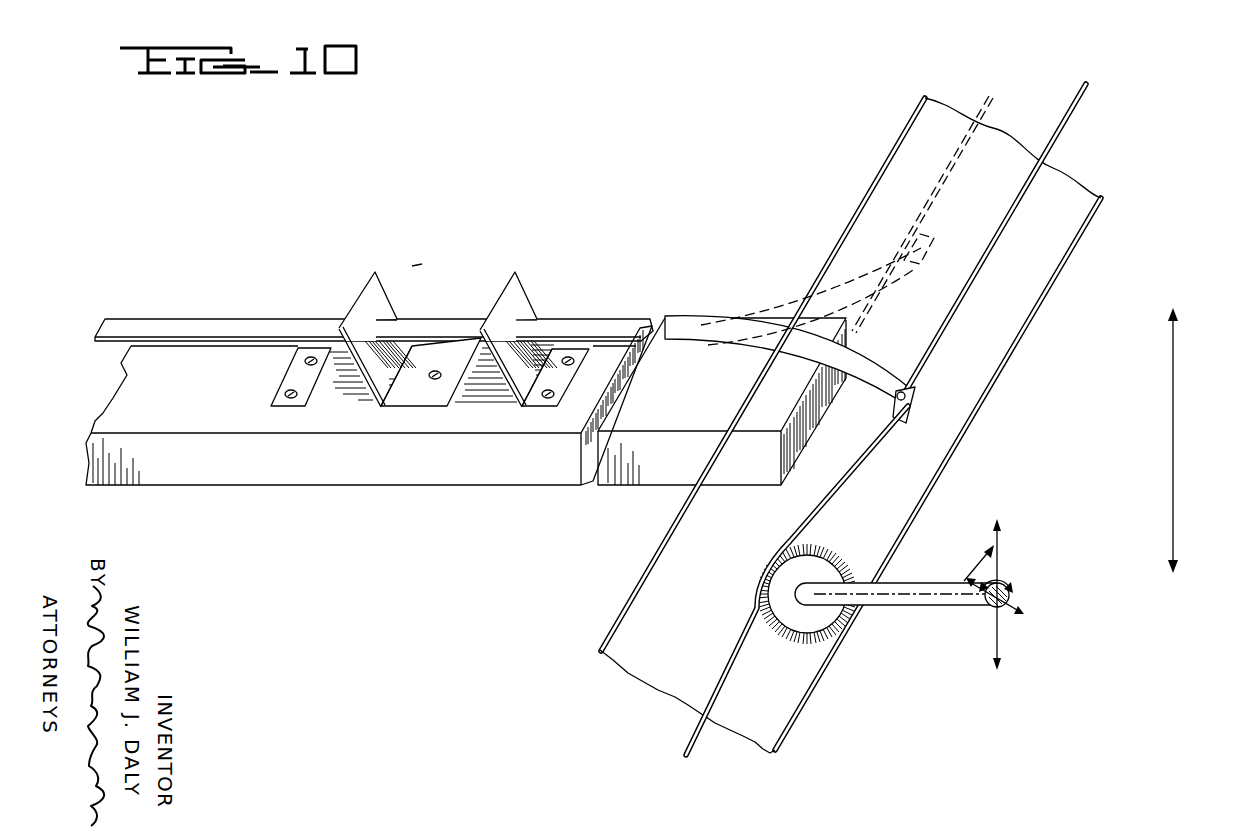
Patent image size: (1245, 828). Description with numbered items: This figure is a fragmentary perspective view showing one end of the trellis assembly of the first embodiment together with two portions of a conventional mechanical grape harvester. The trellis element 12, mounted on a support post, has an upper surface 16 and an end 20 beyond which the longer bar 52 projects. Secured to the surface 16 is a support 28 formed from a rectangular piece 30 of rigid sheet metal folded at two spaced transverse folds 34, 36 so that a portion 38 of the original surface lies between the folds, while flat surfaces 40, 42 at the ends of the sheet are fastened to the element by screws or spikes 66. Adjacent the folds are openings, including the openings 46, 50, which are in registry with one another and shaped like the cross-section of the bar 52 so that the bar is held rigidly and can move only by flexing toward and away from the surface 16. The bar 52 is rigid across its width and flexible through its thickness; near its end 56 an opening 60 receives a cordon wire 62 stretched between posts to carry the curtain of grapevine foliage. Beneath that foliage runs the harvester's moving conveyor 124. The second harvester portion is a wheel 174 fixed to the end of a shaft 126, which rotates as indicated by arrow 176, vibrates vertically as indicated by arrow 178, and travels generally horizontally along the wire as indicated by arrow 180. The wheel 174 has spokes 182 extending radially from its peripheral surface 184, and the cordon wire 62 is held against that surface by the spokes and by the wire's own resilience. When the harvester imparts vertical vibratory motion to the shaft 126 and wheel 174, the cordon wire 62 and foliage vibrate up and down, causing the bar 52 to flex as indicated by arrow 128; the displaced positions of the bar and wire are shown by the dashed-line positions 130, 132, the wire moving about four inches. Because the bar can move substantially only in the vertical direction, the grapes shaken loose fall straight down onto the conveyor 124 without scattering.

The element 12 is at (368, 472).
The surface 16 is at (108, 398).
The end 20 is at (790, 443).
The support 28 is at (370, 402).
The rectangular piece of rigid sheet metal 30 is at (519, 380).
The fold 34 is at (358, 298).
The fold 36 is at (501, 297).
The portion 38 is at (417, 400).
The flat surface 40 is at (280, 390).
The flat surface 42 is at (575, 350).
The opening 46 is at (374, 318).
The opening 50 is at (513, 325).
The bar 52 is at (204, 318).
The end 56 is at (915, 410).
The opening 60 is at (908, 382).
The cordon wire 62 is at (1058, 143).
The screws or spikes 66 is at (287, 388).
The moving conveyor 124 is at (630, 584).
The shaft 126 is at (912, 580).
The arrow 128 is at (1175, 380).
The dashed line position of bar 130 is at (840, 284).
The dashed line position of cordon wire 132 is at (951, 160).
The wheel 174 is at (821, 562).
The arrow 176 is at (1003, 578).
The arrow 178 is at (998, 544).
The arrow 180 is at (977, 578).
The spokes 182 is at (752, 594).
The peripheral surface 184 is at (772, 632).